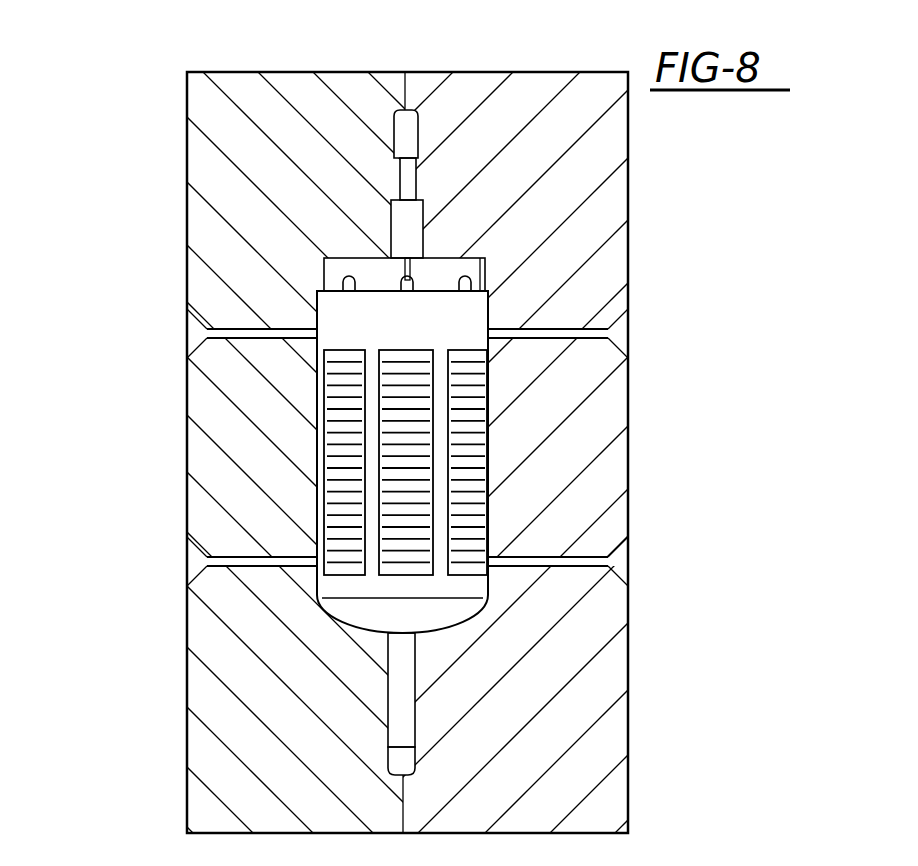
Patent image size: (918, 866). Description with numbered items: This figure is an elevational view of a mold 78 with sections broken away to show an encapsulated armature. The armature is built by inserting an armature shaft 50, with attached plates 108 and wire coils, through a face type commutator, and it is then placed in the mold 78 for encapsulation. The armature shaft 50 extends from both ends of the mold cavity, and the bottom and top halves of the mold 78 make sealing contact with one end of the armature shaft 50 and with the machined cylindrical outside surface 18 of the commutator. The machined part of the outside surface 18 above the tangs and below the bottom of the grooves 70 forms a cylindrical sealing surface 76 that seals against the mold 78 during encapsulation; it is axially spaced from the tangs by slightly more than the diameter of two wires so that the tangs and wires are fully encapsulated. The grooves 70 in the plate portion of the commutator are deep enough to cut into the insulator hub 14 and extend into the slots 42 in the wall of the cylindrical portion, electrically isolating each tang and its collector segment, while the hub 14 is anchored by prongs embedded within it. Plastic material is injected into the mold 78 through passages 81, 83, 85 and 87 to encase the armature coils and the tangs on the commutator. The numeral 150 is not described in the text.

The insulator hub 14 is at (407, 280).
The outside surface 18 is at (470, 275).
The slot 42 is at (345, 285).
The armature shaft 50 is at (400, 125).
The groove 70 is at (415, 272).
The cylindrical sealing surface 76 is at (480, 288).
The mold 78 is at (637, 253).
The passage 81 is at (207, 333).
The passage 83 is at (207, 557).
The passage 85 is at (607, 333).
The passage 87 is at (605, 559).
The plates 108 is at (487, 492).
The housing 150 is at (330, 307).